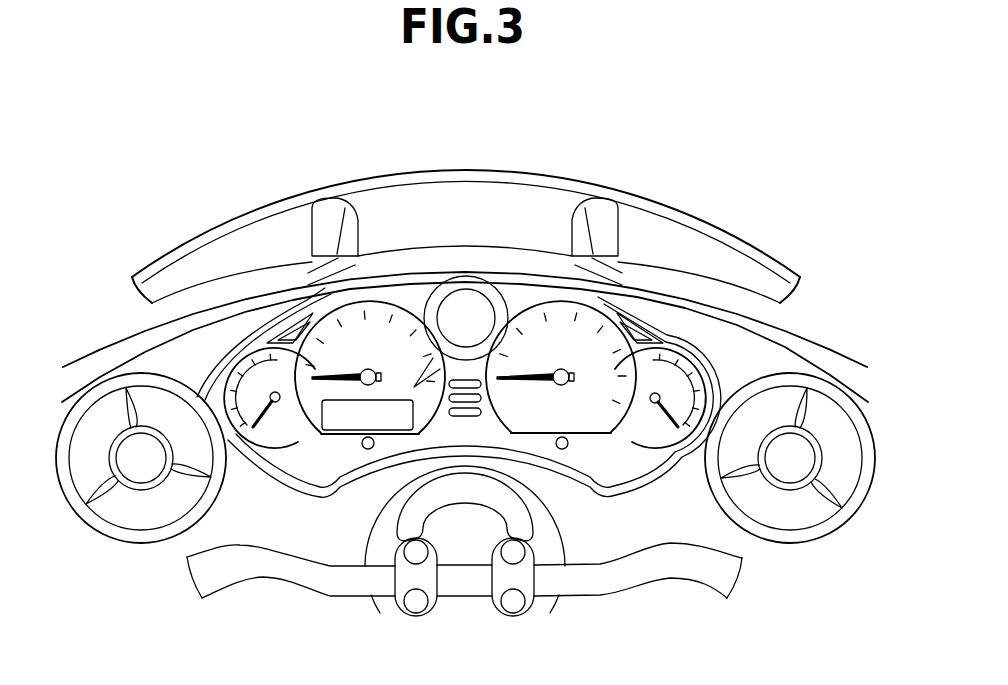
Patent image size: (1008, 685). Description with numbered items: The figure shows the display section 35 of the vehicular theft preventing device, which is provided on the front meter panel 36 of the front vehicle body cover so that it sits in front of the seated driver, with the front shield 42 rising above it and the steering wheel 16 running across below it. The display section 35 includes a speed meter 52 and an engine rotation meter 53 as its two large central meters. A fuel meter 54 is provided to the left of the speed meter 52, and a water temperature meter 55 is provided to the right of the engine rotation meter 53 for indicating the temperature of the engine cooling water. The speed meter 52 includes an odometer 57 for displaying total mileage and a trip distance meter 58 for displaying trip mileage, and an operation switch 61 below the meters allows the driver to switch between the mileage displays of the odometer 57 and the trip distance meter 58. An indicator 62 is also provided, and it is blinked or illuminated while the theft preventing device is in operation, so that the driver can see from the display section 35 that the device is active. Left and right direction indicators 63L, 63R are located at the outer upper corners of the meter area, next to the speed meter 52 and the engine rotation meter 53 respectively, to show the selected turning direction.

The steering wheel 16 is at (610, 583).
The display section 35 is at (471, 298).
The front meter panel 36 is at (677, 330).
The front shield 42 is at (505, 203).
The speed meter 52 is at (322, 322).
The engine rotation meter 53 is at (608, 322).
The fuel meter 54 is at (227, 390).
The water temperature meter 55 is at (697, 373).
The odometer 57 is at (447, 244).
The trip distance meter 58 is at (414, 387).
The operation switch 61 is at (368, 449).
The indicator 62 is at (562, 449).
The left direction indicator 63L is at (288, 338).
The right direction indicator 63R is at (643, 337).